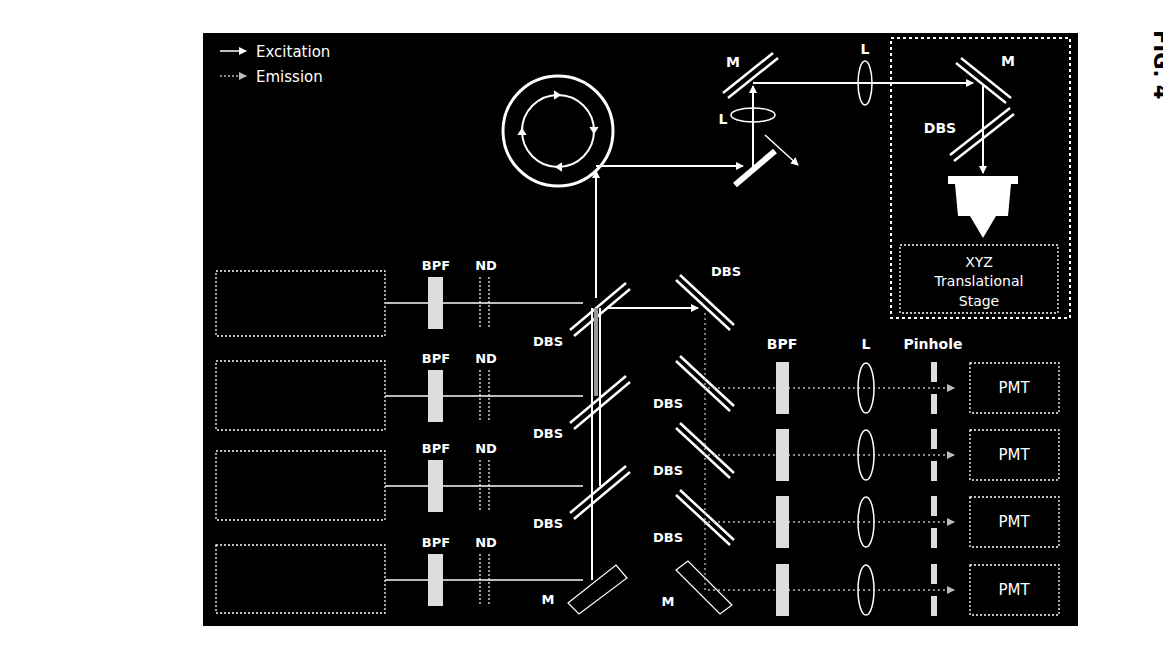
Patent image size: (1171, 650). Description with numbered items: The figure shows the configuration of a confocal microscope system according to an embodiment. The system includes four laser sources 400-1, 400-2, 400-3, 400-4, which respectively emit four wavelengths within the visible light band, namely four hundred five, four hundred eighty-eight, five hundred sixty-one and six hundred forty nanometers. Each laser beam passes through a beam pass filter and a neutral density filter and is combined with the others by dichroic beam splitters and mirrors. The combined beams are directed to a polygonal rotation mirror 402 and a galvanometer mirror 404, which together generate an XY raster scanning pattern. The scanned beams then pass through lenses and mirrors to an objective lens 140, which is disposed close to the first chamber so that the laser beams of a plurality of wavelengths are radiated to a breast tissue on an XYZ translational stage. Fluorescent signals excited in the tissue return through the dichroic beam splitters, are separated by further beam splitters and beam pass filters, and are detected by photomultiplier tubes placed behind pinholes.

The laser source 400-1 is at (195, 300).
The laser source 400-2 is at (195, 390).
The laser source 400-3 is at (195, 488).
The laser source 400-4 is at (195, 578).
The polygonal rotation mirror 402 is at (507, 162).
The galvanometer mirror 404 is at (728, 165).
The objective lens 140 is at (940, 190).